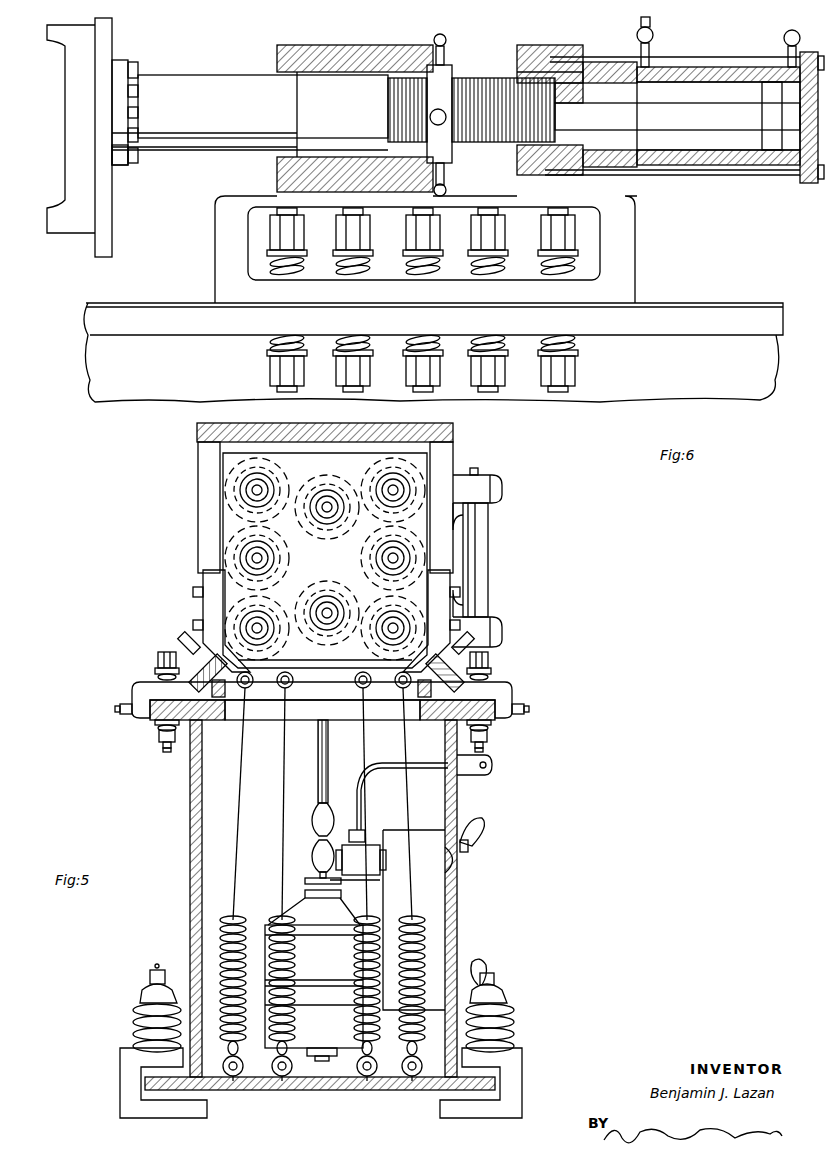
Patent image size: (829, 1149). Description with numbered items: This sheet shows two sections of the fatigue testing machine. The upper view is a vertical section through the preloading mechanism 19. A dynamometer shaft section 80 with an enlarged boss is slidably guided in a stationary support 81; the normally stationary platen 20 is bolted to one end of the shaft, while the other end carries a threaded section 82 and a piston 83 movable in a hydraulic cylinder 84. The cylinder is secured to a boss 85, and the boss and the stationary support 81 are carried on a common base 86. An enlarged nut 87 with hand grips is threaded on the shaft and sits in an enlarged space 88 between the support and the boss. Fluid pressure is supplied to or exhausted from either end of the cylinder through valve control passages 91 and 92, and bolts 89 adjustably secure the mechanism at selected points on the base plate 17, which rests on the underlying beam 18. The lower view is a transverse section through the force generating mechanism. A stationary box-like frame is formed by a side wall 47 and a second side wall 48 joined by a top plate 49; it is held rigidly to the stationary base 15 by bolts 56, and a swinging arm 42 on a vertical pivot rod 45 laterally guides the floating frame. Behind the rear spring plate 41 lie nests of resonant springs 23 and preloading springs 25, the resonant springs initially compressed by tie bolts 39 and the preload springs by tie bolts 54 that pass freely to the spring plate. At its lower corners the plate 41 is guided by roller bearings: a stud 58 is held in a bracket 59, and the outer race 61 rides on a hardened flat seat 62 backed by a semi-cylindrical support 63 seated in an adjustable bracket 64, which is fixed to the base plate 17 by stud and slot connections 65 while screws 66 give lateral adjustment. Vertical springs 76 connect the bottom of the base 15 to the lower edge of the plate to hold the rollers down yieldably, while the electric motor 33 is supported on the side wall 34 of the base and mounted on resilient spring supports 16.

In FIG. 6, the normally stationary platen 20 is at (113, 50).
In FIG. 6, the dynamometer shaft section 80 is at (206, 92).
In FIG. 6, the stationary support 81 is at (395, 46).
In FIG. 6, the threaded section 82 is at (470, 92).
In FIG. 6, the enlarged nut 87 is at (446, 65).
In FIG. 6, the enlarged space 88 is at (506, 59).
In FIG. 6, the boss 85 is at (562, 50).
In FIG. 6, the hydraulic cylinder 84 is at (700, 68).
In FIG. 6, the piston 83 is at (770, 96).
In FIG. 6, the valve control passage 91 is at (652, 38).
In FIG. 6, the preloading mechanism 19 is at (626, 40).
In FIG. 6, the valve control passage 92 is at (798, 38).
In FIG. 6, the common base 86 is at (620, 244).
In FIG. 6, the bolts 89 is at (548, 240).
In FIG. 6, the base plate 17 is at (694, 322).
In FIG. 6, the beam 18 is at (764, 308).
In FIG. 5, the top plate 49 is at (446, 426).
In FIG. 5, the second side wall 48 is at (202, 460).
In FIG. 5, the side wall 47 is at (440, 563).
In FIG. 5, the rear spring plate 41 is at (420, 472).
In FIG. 5, the vertical pivot rod 45 is at (480, 475).
In FIG. 5, the swinging arm 42 is at (470, 536).
In FIG. 5, the resonant springs 23 is at (324, 554).
In FIG. 5, the preloading springs 25 is at (228, 498).
In FIG. 5, the tie bolts 54 is at (268, 484).
In FIG. 5, the tie bolts 39 is at (318, 518).
In FIG. 5, the bracket 59 is at (210, 578).
In FIG. 5, the stud 58 is at (190, 640).
In FIG. 5, the flat seat 62 is at (208, 668).
In FIG. 5, the semi-cylindrical support 63 is at (212, 688).
In FIG. 5, the adjustable bracket 64 is at (142, 685).
In FIG. 5, the outer race 61 is at (226, 712).
In FIG. 5, the screws 66 is at (118, 706).
In FIG. 5, the bolts 56 is at (490, 662).
In FIG. 5, the stud and slot connections 65 is at (180, 738).
In FIG. 5, the stationary base 15 is at (484, 915).
In FIG. 5, the springs 76 is at (242, 818).
In FIG. 5, the electric motor 33 is at (306, 906).
In FIG. 5, the side wall 34 is at (458, 813).
In FIG. 5, the spring insulator 16 is at (135, 1008).